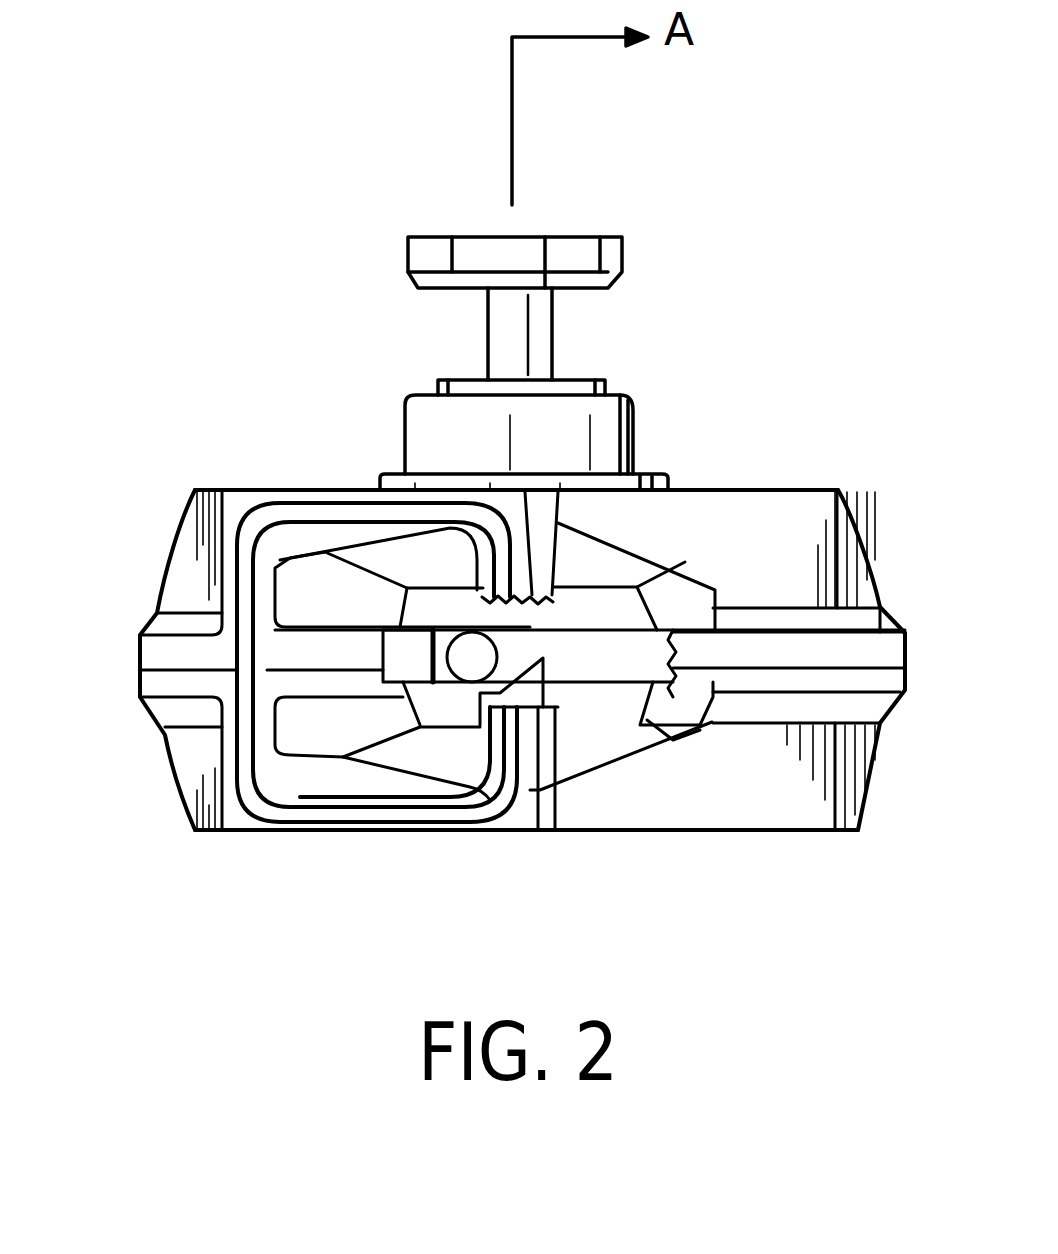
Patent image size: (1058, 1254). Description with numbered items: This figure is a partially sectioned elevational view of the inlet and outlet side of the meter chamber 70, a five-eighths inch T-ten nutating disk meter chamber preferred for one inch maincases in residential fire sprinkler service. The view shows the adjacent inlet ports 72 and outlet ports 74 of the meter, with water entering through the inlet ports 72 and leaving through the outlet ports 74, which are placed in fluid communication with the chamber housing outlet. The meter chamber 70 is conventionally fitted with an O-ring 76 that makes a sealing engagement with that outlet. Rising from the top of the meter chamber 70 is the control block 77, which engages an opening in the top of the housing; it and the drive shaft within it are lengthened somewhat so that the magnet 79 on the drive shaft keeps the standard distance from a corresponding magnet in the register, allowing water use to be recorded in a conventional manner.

The meter chamber 70 is at (752, 219).
The inlet ports 72 is at (622, 588).
The outlet ports 74 is at (342, 607).
The O-ring 76 is at (360, 508).
The control block 77 is at (488, 330).
The magnet 79 is at (568, 235).